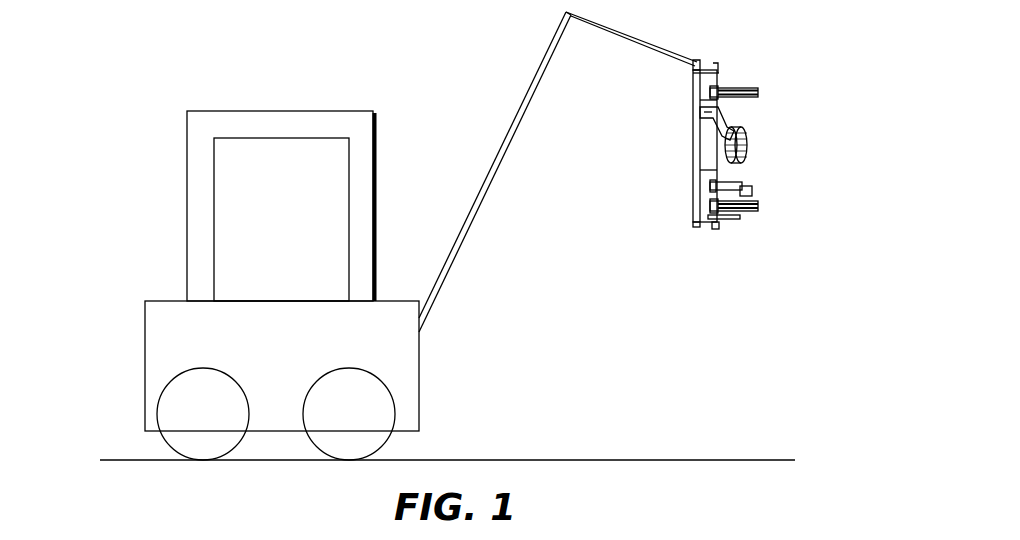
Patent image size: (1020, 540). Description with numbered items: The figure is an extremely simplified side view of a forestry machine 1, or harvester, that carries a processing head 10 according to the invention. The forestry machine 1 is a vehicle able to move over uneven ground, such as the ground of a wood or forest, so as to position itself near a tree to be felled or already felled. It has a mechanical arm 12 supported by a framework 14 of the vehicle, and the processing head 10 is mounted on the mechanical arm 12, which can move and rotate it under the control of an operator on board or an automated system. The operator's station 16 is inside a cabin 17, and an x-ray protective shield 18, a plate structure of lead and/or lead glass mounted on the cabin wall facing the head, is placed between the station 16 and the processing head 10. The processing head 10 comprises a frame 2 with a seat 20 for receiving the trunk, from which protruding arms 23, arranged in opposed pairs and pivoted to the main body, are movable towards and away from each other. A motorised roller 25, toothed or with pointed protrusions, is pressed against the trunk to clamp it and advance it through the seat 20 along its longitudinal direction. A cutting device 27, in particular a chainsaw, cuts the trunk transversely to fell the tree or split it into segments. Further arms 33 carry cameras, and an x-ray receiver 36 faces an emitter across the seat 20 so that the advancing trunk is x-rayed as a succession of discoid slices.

The forestry machine 1 is at (132, 217).
The frame 2 is at (687, 163).
The processing head 10 is at (764, 185).
The mechanical arm 12 is at (494, 147).
The framework 14 is at (175, 338).
The station 16 is at (281, 219).
The cabin 17 is at (262, 108).
The x-ray protective shield 18 is at (376, 168).
The seat 20 is at (746, 107).
The protruding arms 23 is at (736, 88).
The roller 25 is at (747, 145).
The cutting device 27 is at (733, 217).
The arms 33 is at (728, 184).
The x-ray receiver 36 is at (753, 190).